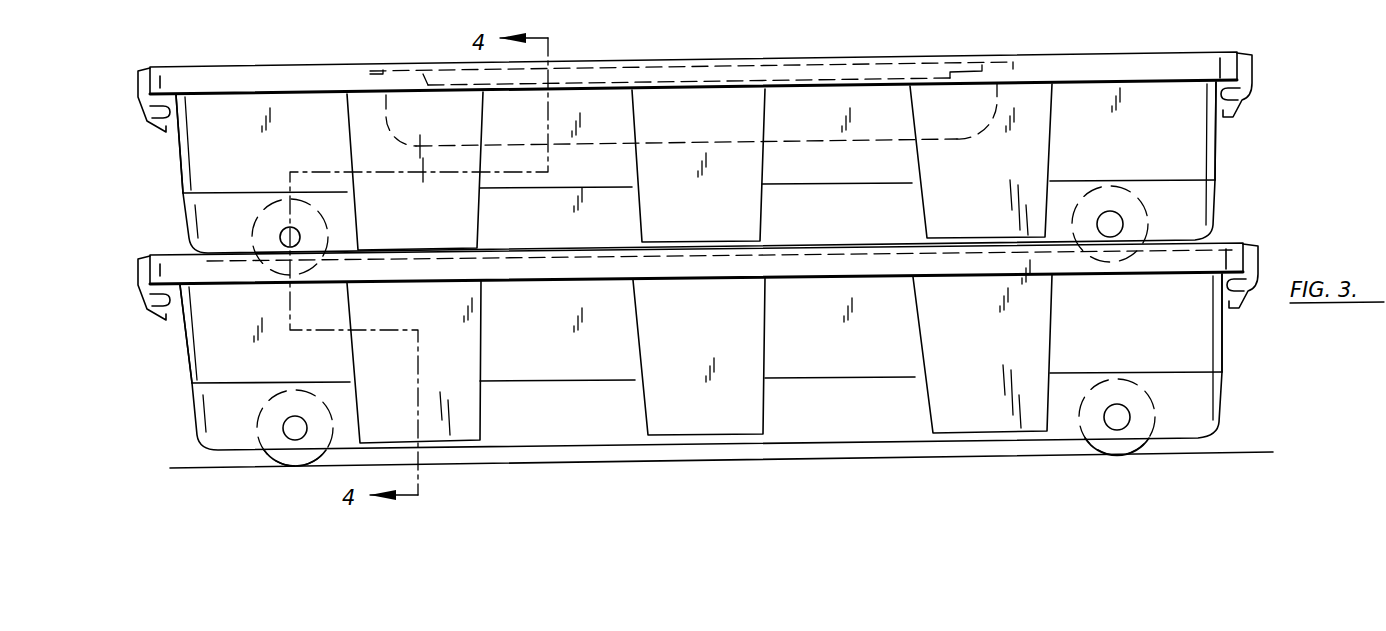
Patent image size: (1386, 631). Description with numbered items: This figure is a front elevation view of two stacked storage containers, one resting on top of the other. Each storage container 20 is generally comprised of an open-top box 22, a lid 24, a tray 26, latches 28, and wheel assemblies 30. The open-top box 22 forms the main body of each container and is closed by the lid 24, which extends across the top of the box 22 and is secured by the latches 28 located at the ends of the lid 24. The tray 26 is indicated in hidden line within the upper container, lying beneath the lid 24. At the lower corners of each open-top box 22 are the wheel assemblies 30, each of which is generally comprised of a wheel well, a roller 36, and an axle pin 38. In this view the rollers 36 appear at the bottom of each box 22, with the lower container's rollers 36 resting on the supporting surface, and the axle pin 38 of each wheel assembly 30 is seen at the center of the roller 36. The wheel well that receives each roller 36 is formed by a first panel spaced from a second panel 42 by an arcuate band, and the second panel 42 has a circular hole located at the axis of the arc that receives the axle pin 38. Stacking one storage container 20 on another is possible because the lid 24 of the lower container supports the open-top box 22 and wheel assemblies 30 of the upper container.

The storage container 20 is at (1218, 198).
The open-top box 22 is at (1183, 155).
The lid 24 is at (1240, 47).
The tray 26 is at (947, 143).
The latches 28 is at (1258, 92).
The wheel assemblies 30 is at (325, 473).
The roller 36 is at (288, 462).
The axle pin 38 is at (296, 415).
The second panel 42 is at (270, 432).